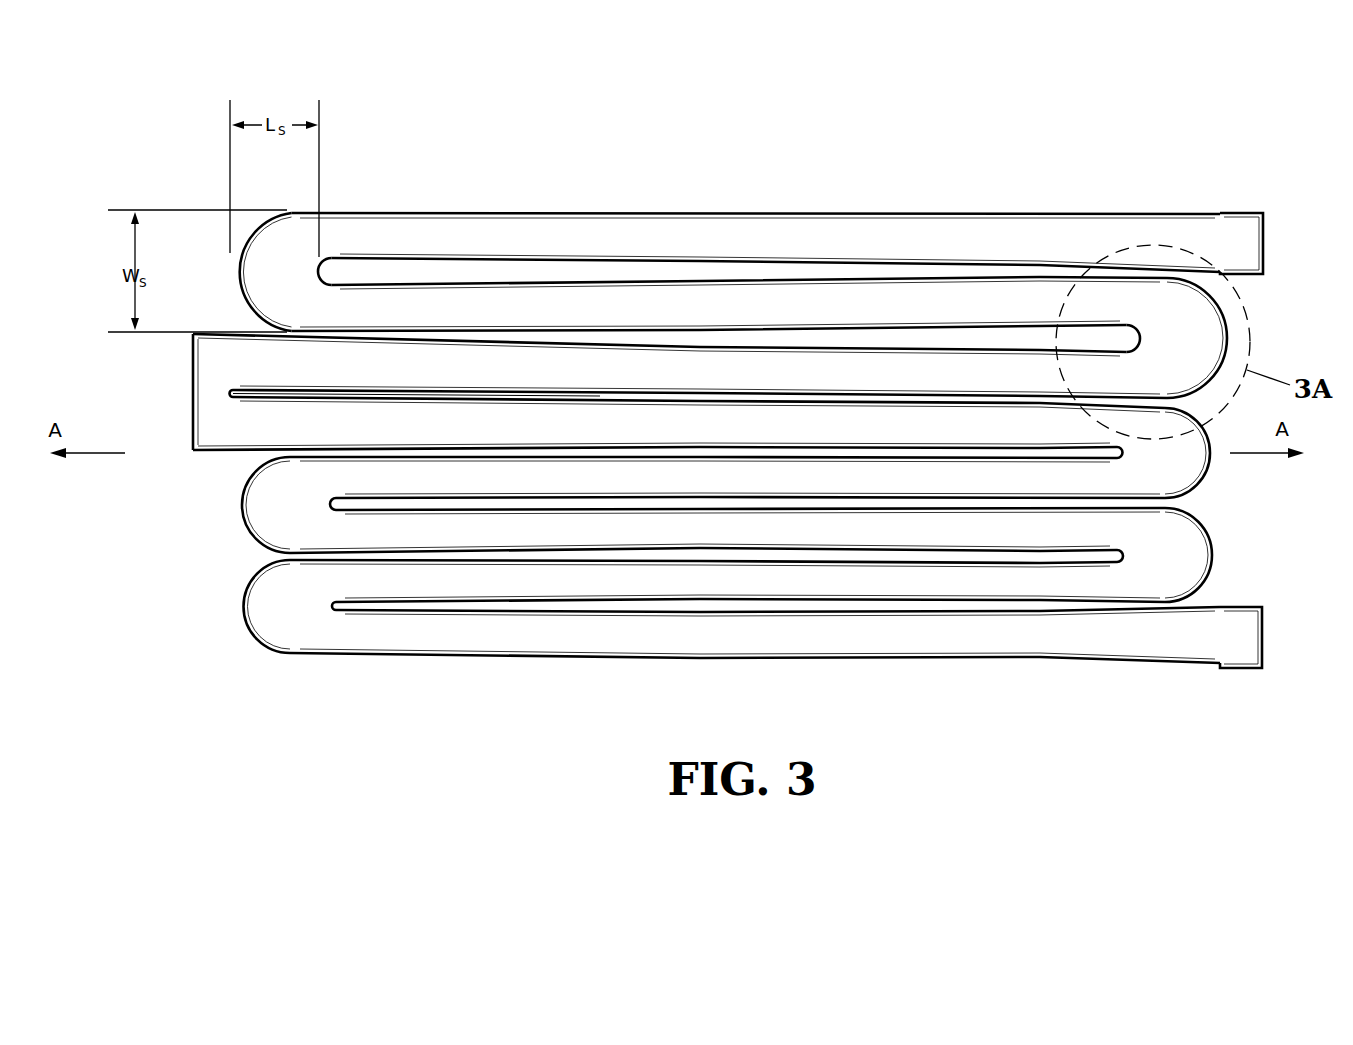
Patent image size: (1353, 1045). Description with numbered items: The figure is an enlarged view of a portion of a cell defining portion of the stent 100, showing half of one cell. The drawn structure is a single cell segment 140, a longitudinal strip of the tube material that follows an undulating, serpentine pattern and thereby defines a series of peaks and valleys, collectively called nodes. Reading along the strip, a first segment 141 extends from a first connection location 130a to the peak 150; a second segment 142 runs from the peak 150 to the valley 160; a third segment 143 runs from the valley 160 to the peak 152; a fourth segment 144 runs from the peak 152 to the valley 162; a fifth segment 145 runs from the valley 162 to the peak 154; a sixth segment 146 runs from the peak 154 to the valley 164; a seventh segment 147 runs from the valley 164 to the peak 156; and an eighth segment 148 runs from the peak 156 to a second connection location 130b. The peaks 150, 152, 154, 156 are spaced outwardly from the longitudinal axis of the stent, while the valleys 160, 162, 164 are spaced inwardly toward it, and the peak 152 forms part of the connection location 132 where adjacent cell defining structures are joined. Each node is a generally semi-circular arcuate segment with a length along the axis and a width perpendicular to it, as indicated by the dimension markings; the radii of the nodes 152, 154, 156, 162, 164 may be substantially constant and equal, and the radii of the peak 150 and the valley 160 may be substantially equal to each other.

The stent 100 is at (725, 386).
The cell segment 140 is at (725, 416).
The first segment 141 is at (691, 232).
The second segment 142 is at (862, 290).
The third segment 143 is at (925, 378).
The fourth segment 144 is at (990, 427).
The fifth segment 145 is at (995, 475).
The sixth segment 146 is at (928, 530).
The seventh segment 147 is at (872, 580).
The eighth segment 148 is at (787, 633).
The first connection location 130a is at (1242, 238).
The second connection location 130b is at (1235, 650).
The second connection location 132 is at (228, 392).
The peak 150 is at (260, 258).
The peak 152 is at (225, 408).
The peak 154 is at (244, 517).
The peak 156 is at (243, 610).
The valley 160 is at (1185, 345).
The valley 162 is at (1175, 460).
The valley 164 is at (1168, 563).